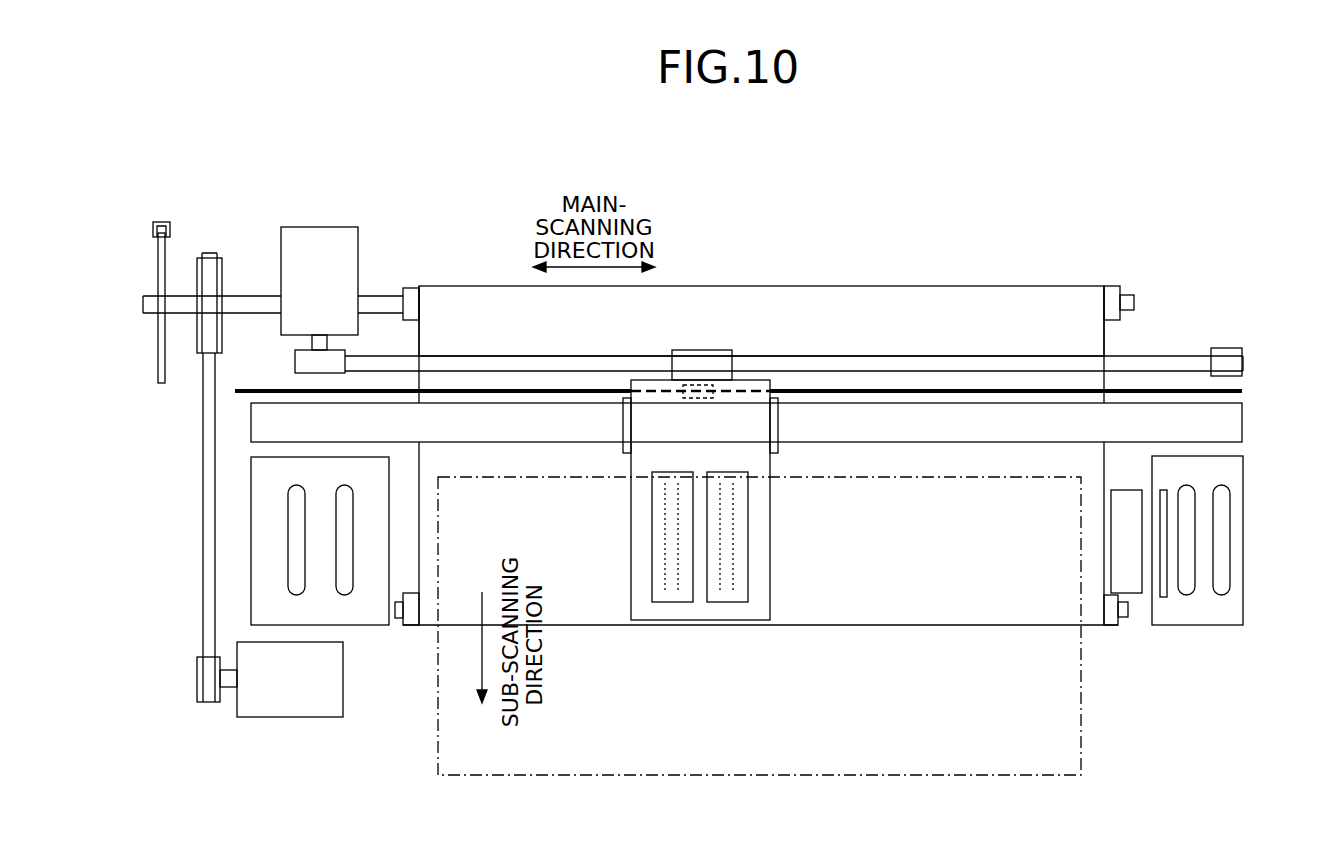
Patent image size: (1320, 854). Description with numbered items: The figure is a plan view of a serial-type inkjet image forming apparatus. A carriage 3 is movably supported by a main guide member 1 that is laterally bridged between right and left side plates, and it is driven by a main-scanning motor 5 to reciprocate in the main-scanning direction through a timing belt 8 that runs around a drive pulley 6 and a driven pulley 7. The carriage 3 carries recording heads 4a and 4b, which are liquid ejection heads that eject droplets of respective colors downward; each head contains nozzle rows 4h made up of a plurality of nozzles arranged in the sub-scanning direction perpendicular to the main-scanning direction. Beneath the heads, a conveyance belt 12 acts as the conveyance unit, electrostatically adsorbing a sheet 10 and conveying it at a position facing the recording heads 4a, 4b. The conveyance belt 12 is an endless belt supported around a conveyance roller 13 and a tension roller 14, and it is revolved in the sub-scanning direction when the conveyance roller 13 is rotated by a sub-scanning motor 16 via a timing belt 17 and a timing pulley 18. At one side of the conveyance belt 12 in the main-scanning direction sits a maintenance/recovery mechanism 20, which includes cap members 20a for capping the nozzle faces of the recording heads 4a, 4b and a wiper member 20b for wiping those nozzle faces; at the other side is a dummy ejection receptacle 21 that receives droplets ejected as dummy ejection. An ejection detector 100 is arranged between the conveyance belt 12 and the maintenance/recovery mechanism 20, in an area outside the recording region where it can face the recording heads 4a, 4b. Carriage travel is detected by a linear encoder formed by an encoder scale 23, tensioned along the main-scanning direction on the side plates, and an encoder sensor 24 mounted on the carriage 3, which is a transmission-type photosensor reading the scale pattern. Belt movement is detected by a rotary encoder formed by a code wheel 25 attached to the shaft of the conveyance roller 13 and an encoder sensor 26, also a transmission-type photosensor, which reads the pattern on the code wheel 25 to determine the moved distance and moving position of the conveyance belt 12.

The main guide member 1 is at (1152, 420).
The carriage 3 is at (748, 405).
The recording head 4a is at (667, 601).
The recording head 4b is at (727, 601).
The nozzle rows 4h is at (665, 570).
The main-scanning motor 5 is at (315, 243).
The drive pulley 6 is at (331, 335).
The driven pulley 7 is at (1227, 349).
The timing belt 8 is at (500, 355).
The sheet 10 is at (1080, 738).
The conveyance belt 12 is at (926, 302).
The conveyance roller 13 is at (1111, 284).
The tension roller 14 is at (1110, 623).
The sub-scanning motor 16 is at (285, 718).
The timing belt 17 is at (205, 478).
The timing pulley 18 is at (214, 253).
The maintenance/recovery mechanism 20 is at (1245, 470).
The cap members 20a is at (1185, 597).
The wiper member 20b is at (1163, 598).
The dummy ejection receptacle 21 is at (355, 618).
The encoder scale 23 is at (978, 389).
The encoder sensor 24 is at (700, 390).
The code wheel 25 is at (157, 343).
The encoder sensor 26 is at (163, 220).
The ejection detector 100 is at (1132, 586).